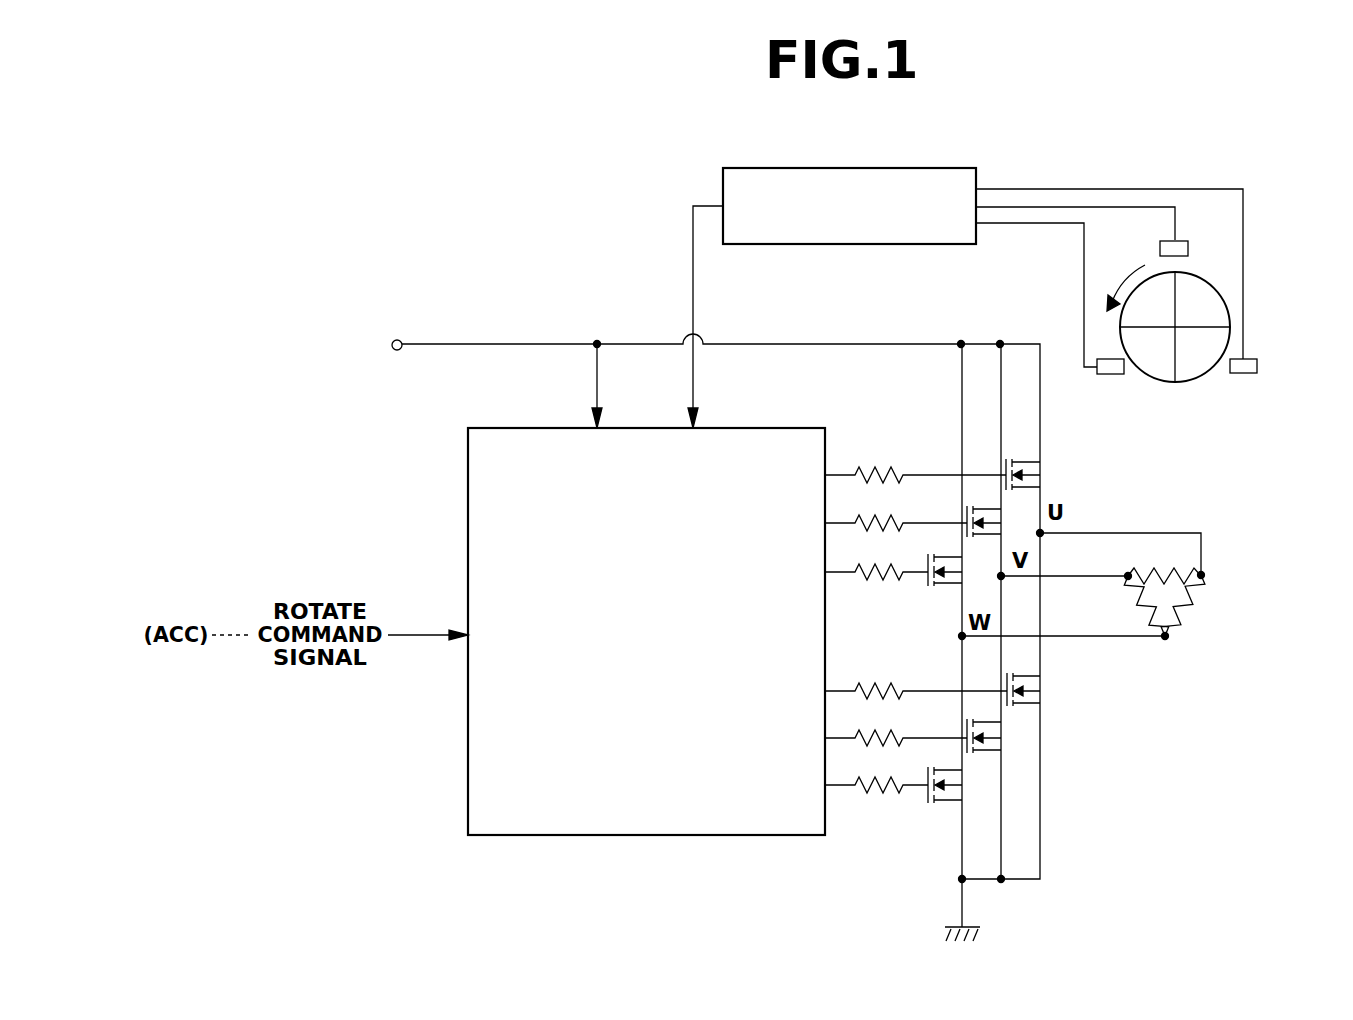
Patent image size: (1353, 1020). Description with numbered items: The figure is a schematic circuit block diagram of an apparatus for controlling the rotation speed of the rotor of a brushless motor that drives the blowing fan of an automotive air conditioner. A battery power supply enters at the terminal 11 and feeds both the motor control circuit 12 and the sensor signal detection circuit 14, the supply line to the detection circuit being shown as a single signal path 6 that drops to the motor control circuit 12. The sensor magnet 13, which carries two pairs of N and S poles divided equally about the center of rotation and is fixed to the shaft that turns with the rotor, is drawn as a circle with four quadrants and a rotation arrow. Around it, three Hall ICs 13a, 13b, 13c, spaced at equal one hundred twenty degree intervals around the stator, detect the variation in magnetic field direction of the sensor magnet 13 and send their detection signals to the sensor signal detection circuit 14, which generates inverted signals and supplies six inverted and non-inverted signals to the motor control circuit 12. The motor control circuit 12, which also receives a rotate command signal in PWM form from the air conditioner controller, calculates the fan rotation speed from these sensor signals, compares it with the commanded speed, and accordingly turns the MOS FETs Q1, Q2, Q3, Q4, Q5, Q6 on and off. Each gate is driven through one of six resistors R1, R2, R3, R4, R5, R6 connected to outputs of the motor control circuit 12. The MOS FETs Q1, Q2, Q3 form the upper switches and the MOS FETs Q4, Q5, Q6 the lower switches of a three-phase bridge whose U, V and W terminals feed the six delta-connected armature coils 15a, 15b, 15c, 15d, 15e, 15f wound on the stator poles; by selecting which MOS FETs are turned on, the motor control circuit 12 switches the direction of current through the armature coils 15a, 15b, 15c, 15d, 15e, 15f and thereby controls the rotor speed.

The sensor signal line 6 is at (700, 245).
The terminal 11 is at (397, 340).
The motor control circuit 12 is at (623, 836).
The sensor magnet 13 is at (1198, 377).
The Hall IC 13a is at (1206, 225).
The Hall IC 13b is at (1115, 375).
The Hall IC 13c is at (1274, 353).
The sensor signal detection circuit 14 is at (779, 168).
The armature coil 15a is at (1257, 605).
The armature coil 15b is at (1190, 531).
The armature coil 15c is at (1170, 637).
The armature coil 15d is at (1197, 598).
The armature coil 15e is at (1155, 580).
The armature coil 15f is at (1147, 620).
The MOS FET Q1 is at (1027, 462).
The MOS FET Q2 is at (988, 509).
The MOS FET Q3 is at (950, 584).
The MOS FET Q4 is at (1027, 703).
The MOS FET Q5 is at (990, 750).
The MOS FET Q6 is at (950, 800).
The resistor R1 is at (915, 462).
The resistor R2 is at (895, 510).
The resistor R3 is at (876, 558).
The resistor R4 is at (915, 678).
The resistor R5 is at (895, 725).
The resistor R6 is at (876, 772).